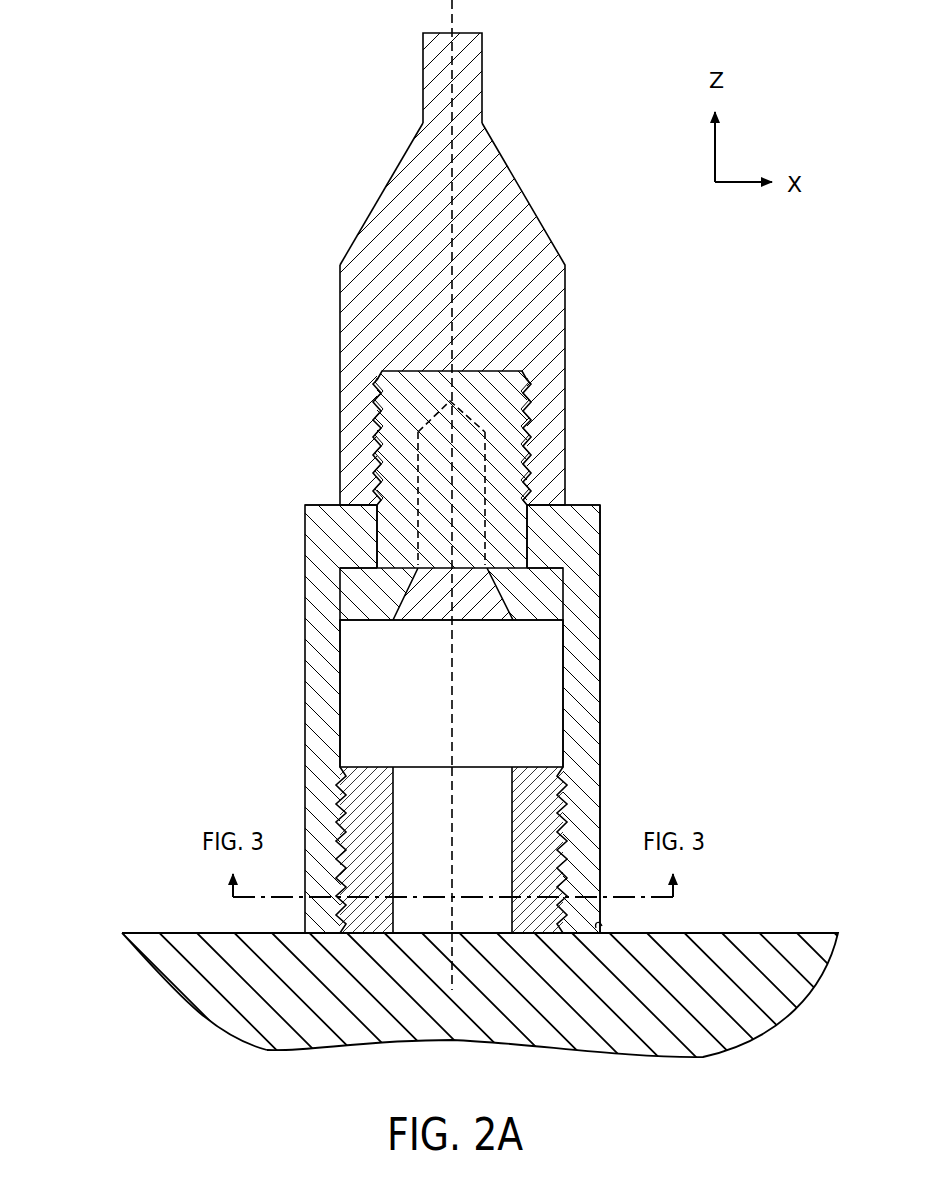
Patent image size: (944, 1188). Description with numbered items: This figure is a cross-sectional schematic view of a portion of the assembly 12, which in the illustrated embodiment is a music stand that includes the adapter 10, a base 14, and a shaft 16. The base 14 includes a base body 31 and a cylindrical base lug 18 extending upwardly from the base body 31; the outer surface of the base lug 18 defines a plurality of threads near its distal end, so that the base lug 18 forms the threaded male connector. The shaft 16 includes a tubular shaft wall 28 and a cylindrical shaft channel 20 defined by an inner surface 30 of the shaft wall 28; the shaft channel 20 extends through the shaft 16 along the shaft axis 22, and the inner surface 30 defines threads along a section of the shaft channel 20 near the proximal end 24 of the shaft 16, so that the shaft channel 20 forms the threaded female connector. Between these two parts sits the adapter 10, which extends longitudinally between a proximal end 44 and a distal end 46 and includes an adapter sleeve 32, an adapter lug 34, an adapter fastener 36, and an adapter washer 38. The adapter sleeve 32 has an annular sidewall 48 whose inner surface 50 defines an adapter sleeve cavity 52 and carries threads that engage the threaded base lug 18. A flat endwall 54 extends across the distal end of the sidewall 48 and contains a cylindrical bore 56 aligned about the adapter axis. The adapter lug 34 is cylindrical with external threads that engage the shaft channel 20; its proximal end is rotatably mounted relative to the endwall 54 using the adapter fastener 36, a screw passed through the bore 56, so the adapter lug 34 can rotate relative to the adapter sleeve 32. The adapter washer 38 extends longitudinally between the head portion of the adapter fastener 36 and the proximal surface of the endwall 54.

The adapter 10 is at (198, 676).
The assembly 12 is at (103, 87).
The base 14 is at (156, 890).
The shaft 16 is at (327, 113).
The base lug 18 is at (472, 852).
The shaft channel 20 is at (378, 323).
The shaft axis 22 is at (453, 977).
The proximal end 24 is at (343, 250).
The shaft wall 28 is at (350, 388).
The inner surface 30 is at (377, 432).
The base body 31 is at (180, 977).
The adapter sleeve 32 is at (588, 638).
The adapter lug 34 is at (397, 383).
The adapter fastener 36 is at (403, 608).
The adapter washer 38 is at (540, 595).
The proximal end 44 is at (605, 927).
The distal end 46 is at (507, 388).
The sidewall 48 is at (588, 705).
The inner surface 50 is at (566, 818).
The adapter sleeve cavity 52 is at (493, 728).
The endwall 54 is at (573, 520).
The bore 56 is at (392, 540).